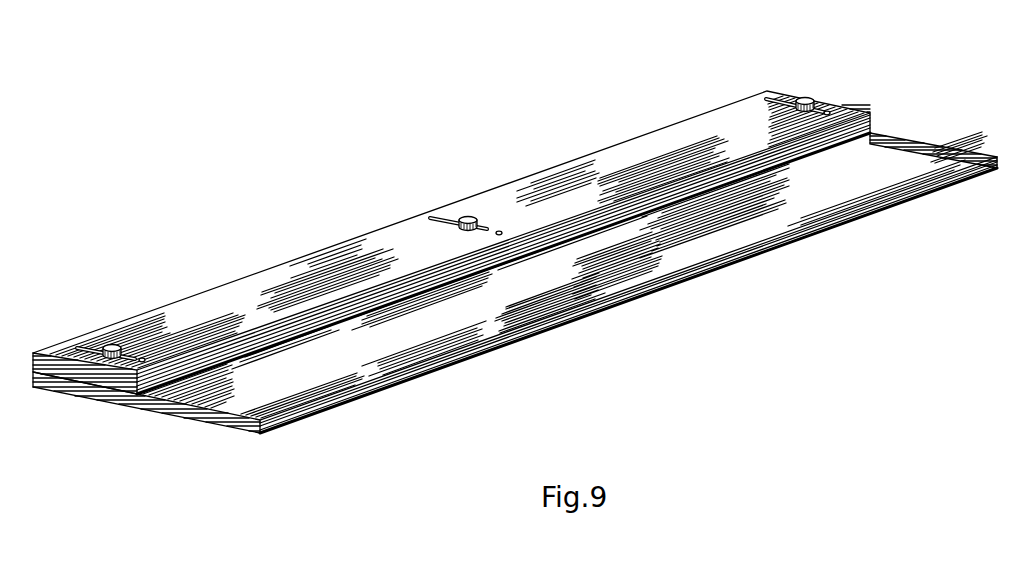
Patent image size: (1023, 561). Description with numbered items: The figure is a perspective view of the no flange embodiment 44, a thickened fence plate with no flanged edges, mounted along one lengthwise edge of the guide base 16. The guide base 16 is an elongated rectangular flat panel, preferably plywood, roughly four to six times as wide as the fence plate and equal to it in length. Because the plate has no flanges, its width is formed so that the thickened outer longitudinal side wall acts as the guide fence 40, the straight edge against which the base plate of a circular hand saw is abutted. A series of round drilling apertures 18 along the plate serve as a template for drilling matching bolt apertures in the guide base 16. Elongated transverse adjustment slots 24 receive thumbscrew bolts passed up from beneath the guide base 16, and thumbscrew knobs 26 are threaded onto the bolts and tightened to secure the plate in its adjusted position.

The guide base 16 is at (425, 343).
The no flange embodiment 44 is at (451, 242).
The guide fence 40 is at (400, 286).
The adjustment slots 24 is at (127, 361).
The thumbscrew knobs 26 is at (110, 341).
The drilling apertures 18 is at (142, 357).